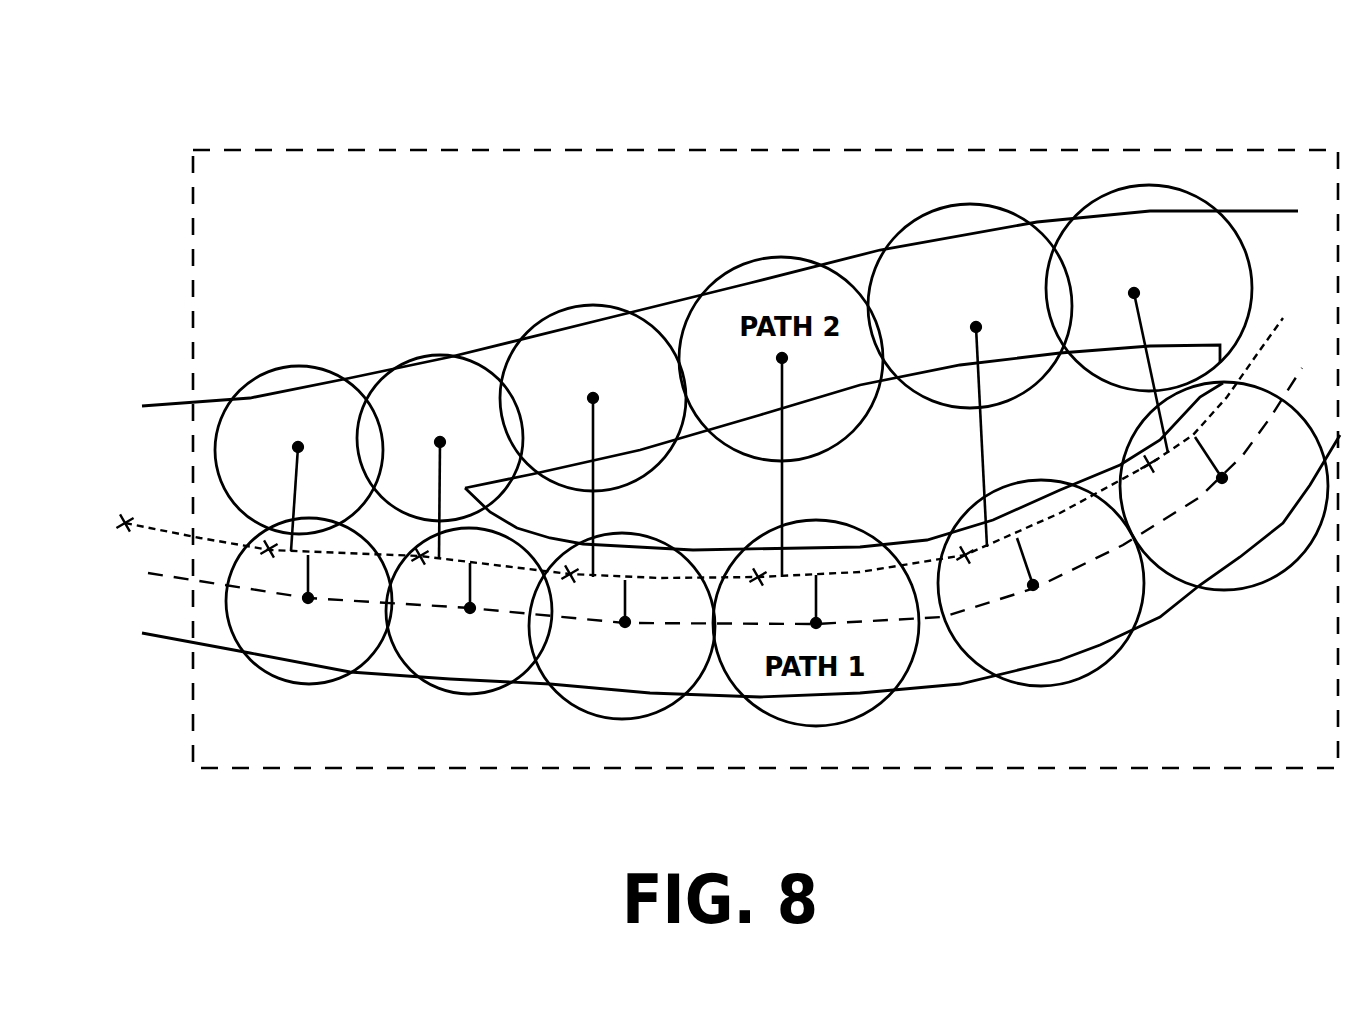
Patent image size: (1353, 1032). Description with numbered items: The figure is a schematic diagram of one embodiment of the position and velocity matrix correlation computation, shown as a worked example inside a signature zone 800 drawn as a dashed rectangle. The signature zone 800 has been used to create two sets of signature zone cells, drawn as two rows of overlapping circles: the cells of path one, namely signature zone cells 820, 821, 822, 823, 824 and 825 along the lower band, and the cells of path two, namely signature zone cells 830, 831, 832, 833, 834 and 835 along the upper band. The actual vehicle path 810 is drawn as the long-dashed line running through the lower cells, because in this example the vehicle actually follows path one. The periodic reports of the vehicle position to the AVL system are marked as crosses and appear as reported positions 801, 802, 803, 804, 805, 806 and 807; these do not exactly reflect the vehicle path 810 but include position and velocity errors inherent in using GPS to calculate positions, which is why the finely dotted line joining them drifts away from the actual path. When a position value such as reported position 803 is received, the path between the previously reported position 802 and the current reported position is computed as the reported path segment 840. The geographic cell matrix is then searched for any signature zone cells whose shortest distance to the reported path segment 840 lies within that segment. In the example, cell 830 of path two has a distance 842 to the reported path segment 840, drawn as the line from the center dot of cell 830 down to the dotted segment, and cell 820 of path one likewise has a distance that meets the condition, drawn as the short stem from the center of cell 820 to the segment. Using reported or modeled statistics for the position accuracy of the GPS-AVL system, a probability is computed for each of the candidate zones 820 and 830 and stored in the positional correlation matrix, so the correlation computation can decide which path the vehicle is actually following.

The signature zone 800 is at (236, 150).
The periodic position report 801 is at (128, 531).
The previously reported position 802 is at (268, 545).
The reported position value 803 is at (416, 550).
The periodic position report 804 is at (568, 568).
The periodic position report 805 is at (757, 570).
The periodic position report 806 is at (963, 550).
The periodic position report 807 is at (1148, 460).
The actual vehicle path 810 is at (182, 578).
The signature zone cell of path 1 820 is at (312, 685).
The signature zone cell of path 1 821 is at (468, 695).
The signature zone cell of path 1 822 is at (633, 720).
The signature zone cell of path 1 823 is at (817, 728).
The signature zone cell of path 1 824 is at (1063, 683).
The signature zone cell of path 1 825 is at (1247, 590).
The signature zone cell of path 2 830 is at (297, 367).
The signature zone cell of path 2 831 is at (440, 355).
The signature zone cell of path 2 832 is at (568, 305).
The signature zone cell of path 2 833 is at (760, 258).
The signature zone cell of path 2 834 is at (957, 203).
The signature zone cell of path 2 835 is at (1148, 183).
The reported path segment 840 is at (150, 522).
The distance 842 is at (302, 473).